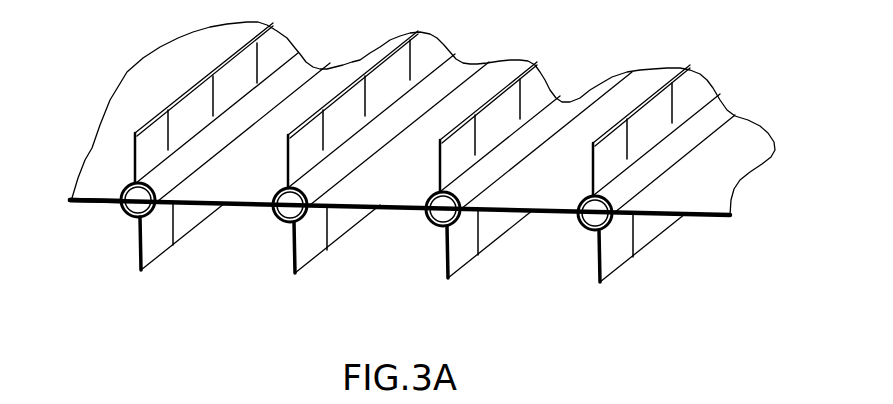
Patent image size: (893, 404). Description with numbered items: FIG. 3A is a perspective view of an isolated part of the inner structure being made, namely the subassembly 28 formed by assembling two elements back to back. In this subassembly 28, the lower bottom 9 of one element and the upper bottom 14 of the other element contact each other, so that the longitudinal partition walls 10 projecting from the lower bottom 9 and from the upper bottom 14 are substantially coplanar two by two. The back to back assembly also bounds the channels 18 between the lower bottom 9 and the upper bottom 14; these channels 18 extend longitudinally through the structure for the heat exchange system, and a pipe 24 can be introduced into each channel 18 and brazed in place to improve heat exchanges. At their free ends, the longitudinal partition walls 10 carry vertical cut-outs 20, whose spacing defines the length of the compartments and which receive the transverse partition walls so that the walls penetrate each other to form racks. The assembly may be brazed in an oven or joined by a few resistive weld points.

The lower bottom 9 is at (718, 185).
The longitudinal partition walls 10 is at (424, 164).
The upper bottom 14 is at (512, 212).
The channels 18 is at (141, 218).
The vertical cut-outs 20 is at (558, 74).
The pipe 24 is at (294, 209).
The subassembly 28 is at (112, 234).